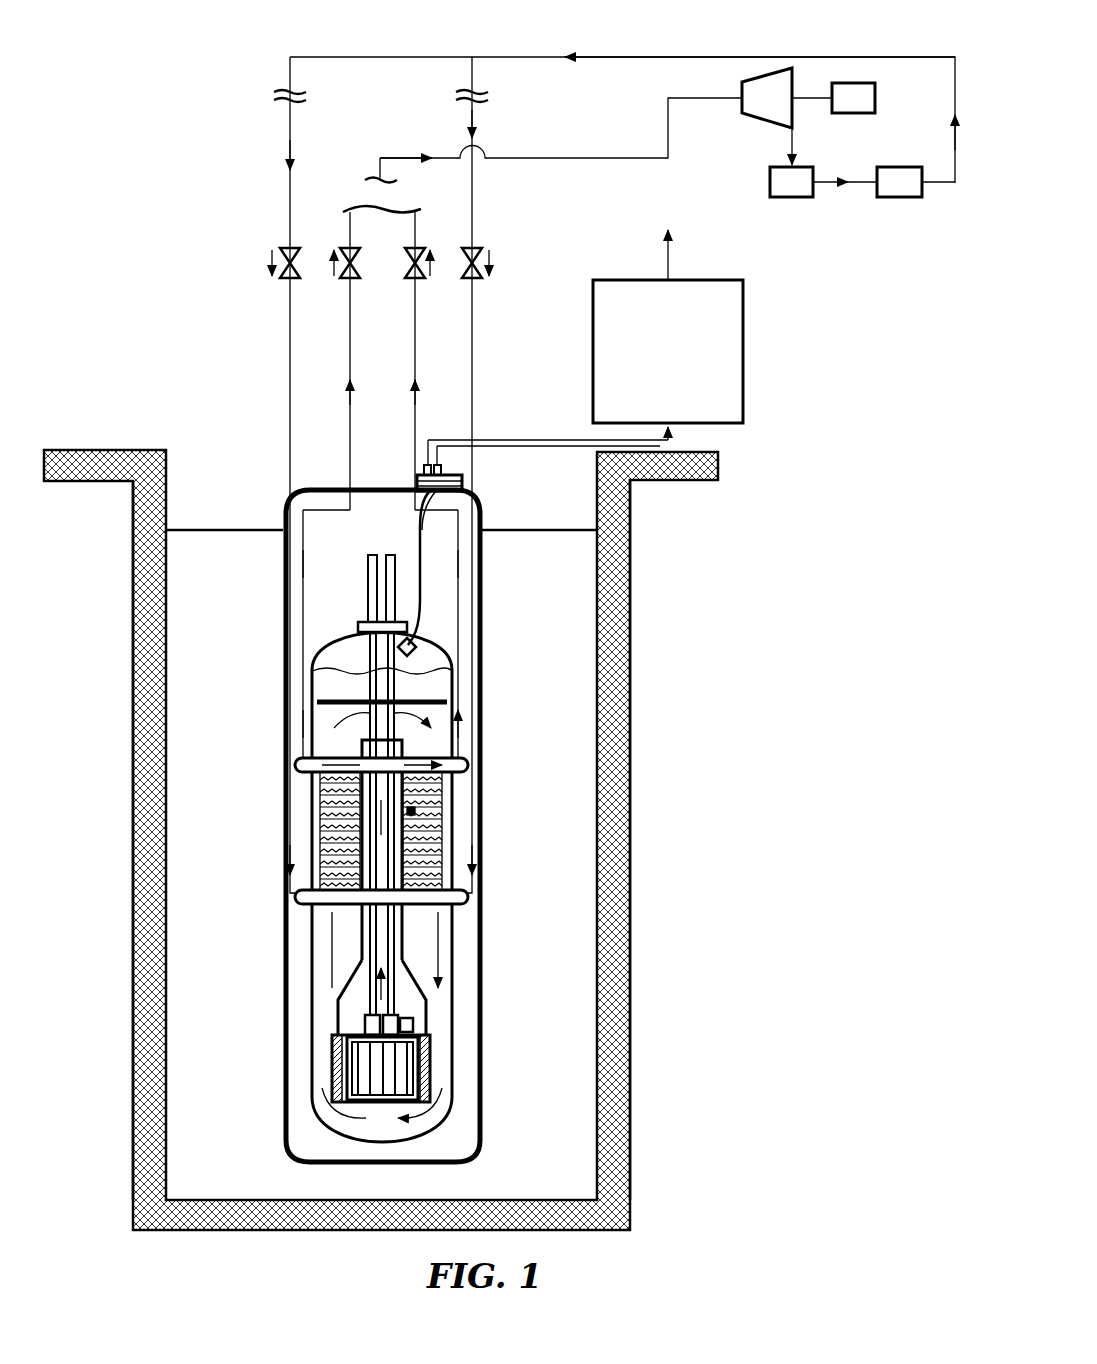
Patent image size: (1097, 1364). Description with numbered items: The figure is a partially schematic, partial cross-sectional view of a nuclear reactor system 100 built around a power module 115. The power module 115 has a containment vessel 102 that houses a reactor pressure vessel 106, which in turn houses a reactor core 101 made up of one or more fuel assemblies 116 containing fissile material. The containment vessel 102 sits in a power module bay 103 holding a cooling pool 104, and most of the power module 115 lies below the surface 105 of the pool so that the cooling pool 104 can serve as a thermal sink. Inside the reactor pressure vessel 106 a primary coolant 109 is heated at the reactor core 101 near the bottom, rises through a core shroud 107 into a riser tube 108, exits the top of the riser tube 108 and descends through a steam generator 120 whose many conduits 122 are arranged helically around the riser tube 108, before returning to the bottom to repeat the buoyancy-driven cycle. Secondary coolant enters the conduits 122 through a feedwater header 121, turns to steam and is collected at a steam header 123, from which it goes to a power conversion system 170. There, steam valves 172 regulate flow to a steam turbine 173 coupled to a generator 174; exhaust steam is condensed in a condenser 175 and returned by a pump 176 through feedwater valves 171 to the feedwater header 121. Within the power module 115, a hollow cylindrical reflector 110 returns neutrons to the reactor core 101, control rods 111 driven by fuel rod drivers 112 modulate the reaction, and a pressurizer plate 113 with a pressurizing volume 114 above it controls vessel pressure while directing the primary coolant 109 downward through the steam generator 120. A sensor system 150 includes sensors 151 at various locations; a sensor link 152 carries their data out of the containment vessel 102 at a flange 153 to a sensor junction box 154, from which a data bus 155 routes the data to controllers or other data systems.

The nuclear reactor system 100 is at (170, 145).
The reactor core 101 is at (358, 1067).
The containment vessel 102 is at (284, 497).
The power module bay 103 is at (132, 417).
The cooling pool 104 is at (195, 585).
The surface of the cooling pool 105 is at (600, 530).
The reactor pressure vessel 106 is at (452, 665).
The core shroud 107 is at (347, 1008).
The riser tube 108 is at (404, 746).
The primary coolant 109 is at (432, 1055).
The hollow cylindrical reflector 110 is at (340, 1082).
The control rods 111 is at (362, 1024).
The fuel rod drivers 112 is at (374, 552).
The pressurizer plate 113 is at (318, 698).
The pressurizing volume 114 is at (345, 652).
The power module 115 is at (122, 287).
The fuel assemblies 116 is at (400, 1082).
The steam generator 120 is at (320, 833).
The feedwater header 121 is at (469, 898).
The conduits 122 is at (446, 823).
The steam header 123 is at (469, 767).
The sensor system 150 is at (525, 600).
The sensors 151 is at (414, 644).
The sensor link 152 is at (421, 578).
The flange 153 is at (462, 483).
The sensor junction box 154 is at (745, 355).
The data bus 155 is at (668, 258).
The power conversion system 170 is at (250, 112).
The feedwater valves 171 is at (284, 245).
The steam valves 172 is at (360, 270).
The steam turbine 173 is at (752, 82).
The generator 174 is at (850, 83).
The condenser 175 is at (790, 197).
The pump 176 is at (900, 197).